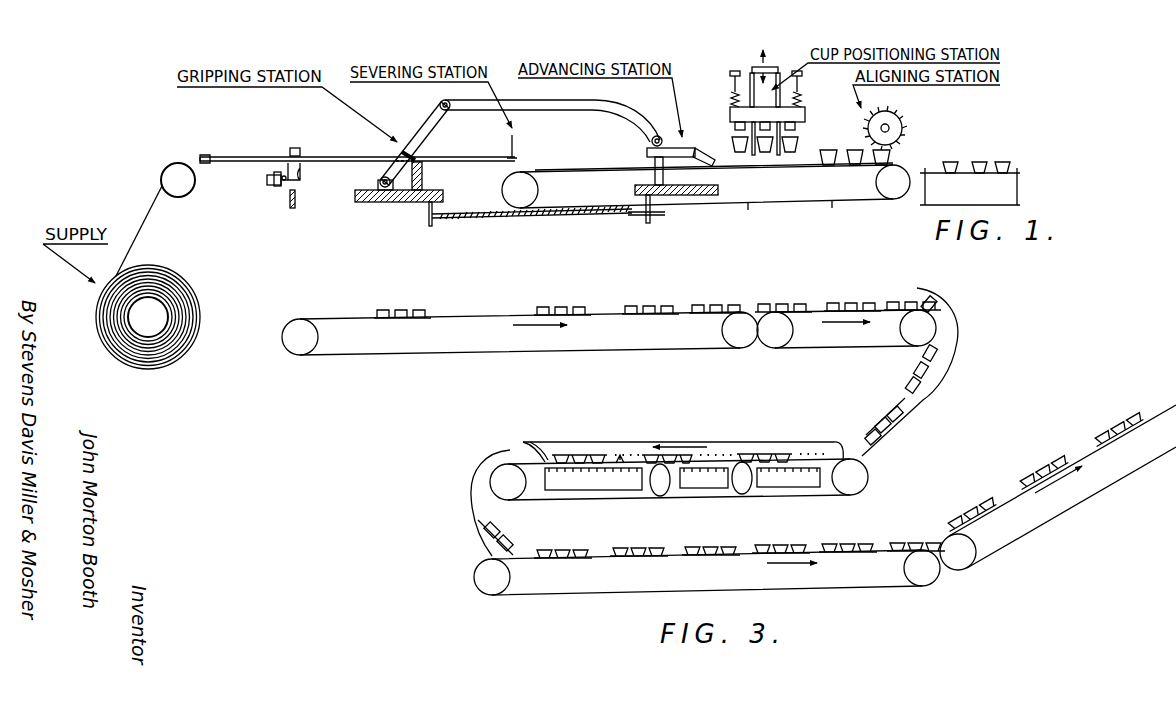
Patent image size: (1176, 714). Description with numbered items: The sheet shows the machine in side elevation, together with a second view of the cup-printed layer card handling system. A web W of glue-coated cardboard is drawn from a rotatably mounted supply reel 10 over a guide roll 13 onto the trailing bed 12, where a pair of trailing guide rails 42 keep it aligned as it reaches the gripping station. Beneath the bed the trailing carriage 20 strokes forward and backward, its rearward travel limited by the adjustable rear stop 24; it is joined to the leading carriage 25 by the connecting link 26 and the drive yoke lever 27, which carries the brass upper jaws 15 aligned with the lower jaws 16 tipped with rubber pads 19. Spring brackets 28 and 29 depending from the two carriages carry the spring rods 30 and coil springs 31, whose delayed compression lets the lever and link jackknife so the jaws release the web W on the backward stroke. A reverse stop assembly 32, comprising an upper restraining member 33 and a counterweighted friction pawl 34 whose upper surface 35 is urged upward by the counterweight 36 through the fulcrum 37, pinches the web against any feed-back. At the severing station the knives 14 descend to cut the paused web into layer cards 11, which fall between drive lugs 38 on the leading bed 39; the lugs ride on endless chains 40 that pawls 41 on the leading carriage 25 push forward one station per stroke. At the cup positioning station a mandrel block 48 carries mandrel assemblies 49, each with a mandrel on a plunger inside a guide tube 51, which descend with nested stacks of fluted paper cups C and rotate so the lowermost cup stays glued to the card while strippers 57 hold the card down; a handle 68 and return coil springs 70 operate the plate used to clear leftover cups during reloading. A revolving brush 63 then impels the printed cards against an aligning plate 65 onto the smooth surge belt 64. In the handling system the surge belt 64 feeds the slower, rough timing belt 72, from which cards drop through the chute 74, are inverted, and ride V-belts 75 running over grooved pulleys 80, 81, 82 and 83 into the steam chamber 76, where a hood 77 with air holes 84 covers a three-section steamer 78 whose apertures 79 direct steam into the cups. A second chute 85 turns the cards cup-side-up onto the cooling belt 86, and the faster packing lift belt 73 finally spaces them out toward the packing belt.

In FIG. 1, the supply reel 10 is at (160, 320).
In FIG. 1, the layer cards 11 is at (563, 167).
In FIG. 3, the layer cards 11 is at (427, 313).
In FIG. 1, the trailing bed 12 is at (230, 165).
In FIG. 1, the guide roll 13 is at (178, 186).
In FIG. 1, the knives 14 is at (516, 131).
In FIG. 1, the upper jaws 15 is at (417, 158).
In FIG. 1, the lower jaws 16 is at (424, 185).
In FIG. 1, the rubber pad 19 is at (424, 164).
In FIG. 1, the trailing carriage 20 is at (392, 201).
In FIG. 1, the rear stop 24 is at (291, 210).
In FIG. 1, the leading carriage 25 is at (702, 196).
In FIG. 1, the connecting link 26 is at (610, 104).
In FIG. 1, the drive yoke lever 27 is at (435, 117).
In FIG. 1, the spring brackets 28 is at (428, 212).
In FIG. 1, the spring brackets 29 is at (650, 226).
In FIG. 1, the spring rods 30 is at (435, 223).
In FIG. 1, the coil springs 31 is at (613, 219).
In FIG. 1, the reverse stop assembly 32 is at (287, 149).
In FIG. 1, the upper restraining member 33 is at (298, 150).
In FIG. 1, the friction pawl 34 is at (300, 193).
In FIG. 1, the upper surface 35 is at (300, 175).
In FIG. 1, the counterweight 36 is at (268, 181).
In FIG. 1, the fulcrum 37 is at (286, 190).
In FIG. 1, the drive lugs 38 is at (540, 168).
In FIG. 1, the leading bed 39 is at (600, 167).
In FIG. 1, the endless chains 40 is at (590, 170).
In FIG. 1, the pawls 41 is at (706, 149).
In FIG. 1, the trailing guide rails 42 is at (220, 157).
In FIG. 1, the mandrel block 48 is at (797, 113).
In FIG. 1, the mandrel 49 is at (722, 133).
In FIG. 1, the guide tube 51 is at (800, 130).
In FIG. 1, the strippers 57 is at (752, 102).
In FIG. 1, the revolving brush 63 is at (892, 112).
In FIG. 1, the surge belt 64 is at (924, 176).
In FIG. 3, the surge belt 64 is at (340, 318).
In FIG. 1, the aligning plate 65 is at (1017, 172).
In FIG. 1, the handle 68 is at (771, 86).
In FIG. 1, the coil springs 70 is at (735, 102).
In FIG. 3, the timing belt 72 is at (816, 311).
In FIG. 3, the packing lift belt 73 is at (1154, 408).
In FIG. 3, the chute 74 is at (942, 372).
In FIG. 3, the V-belts 75 is at (837, 442).
In FIG. 3, the steam chamber 76 is at (827, 422).
In FIG. 3, the hood 77 is at (780, 437).
In FIG. 3, the steamer 78 is at (594, 490).
In FIG. 3, the apertures 79 is at (620, 455).
In FIG. 3, the grooved pulley 80 is at (868, 476).
In FIG. 3, the grooved pulley 81 is at (743, 494).
In FIG. 3, the grooved pulley 82 is at (660, 496).
In FIG. 3, the grooved pulley 83 is at (509, 490).
In FIG. 3, the air holes 84 is at (545, 455).
In FIG. 3, the chute 85 is at (474, 479).
In FIG. 3, the cooling belt 86 is at (605, 557).
In FIG. 1, the web W is at (188, 160).
In FIG. 1, the fluted paper cups C is at (797, 147).